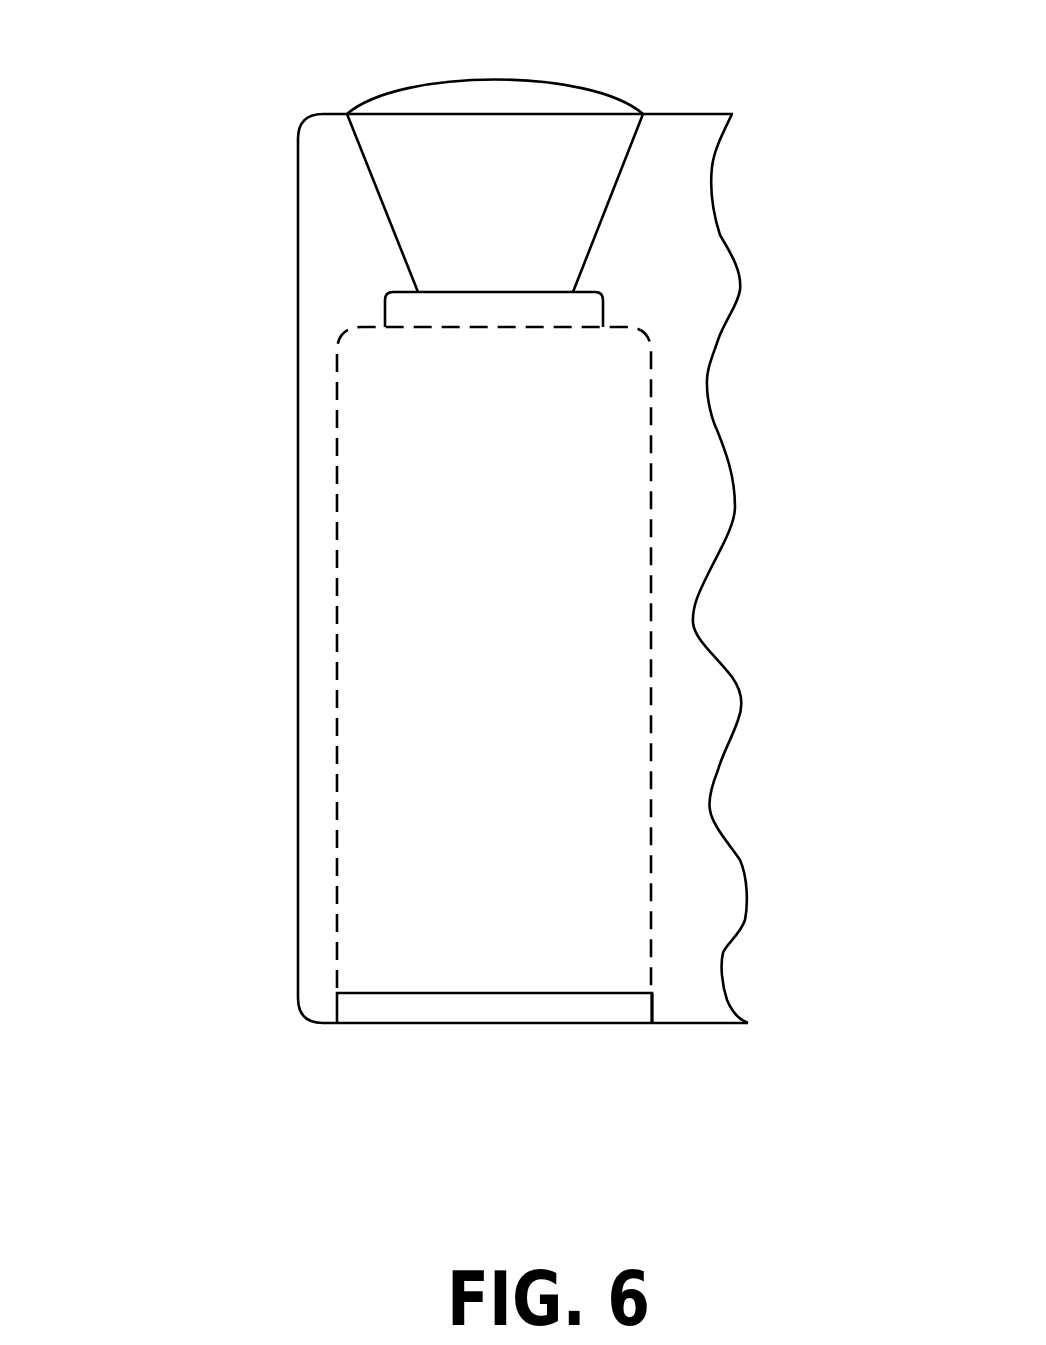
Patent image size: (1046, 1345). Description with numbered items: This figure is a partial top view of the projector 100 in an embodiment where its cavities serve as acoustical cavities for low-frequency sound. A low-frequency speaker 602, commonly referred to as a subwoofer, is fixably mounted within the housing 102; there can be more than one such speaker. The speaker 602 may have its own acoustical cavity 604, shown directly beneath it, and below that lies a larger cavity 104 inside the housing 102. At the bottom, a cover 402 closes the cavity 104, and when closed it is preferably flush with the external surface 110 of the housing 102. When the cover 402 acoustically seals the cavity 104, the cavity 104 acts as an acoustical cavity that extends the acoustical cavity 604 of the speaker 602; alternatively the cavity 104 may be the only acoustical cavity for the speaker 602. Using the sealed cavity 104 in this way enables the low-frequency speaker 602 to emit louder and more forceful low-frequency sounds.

The projector 100 is at (129, 682).
The housing 102 is at (317, 510).
The cavities 104 is at (510, 627).
The external surfaces 110 is at (657, 1027).
The covers 402 is at (387, 1013).
The low-frequency speaker 602 is at (570, 130).
The acoustical cavity 604 is at (578, 310).